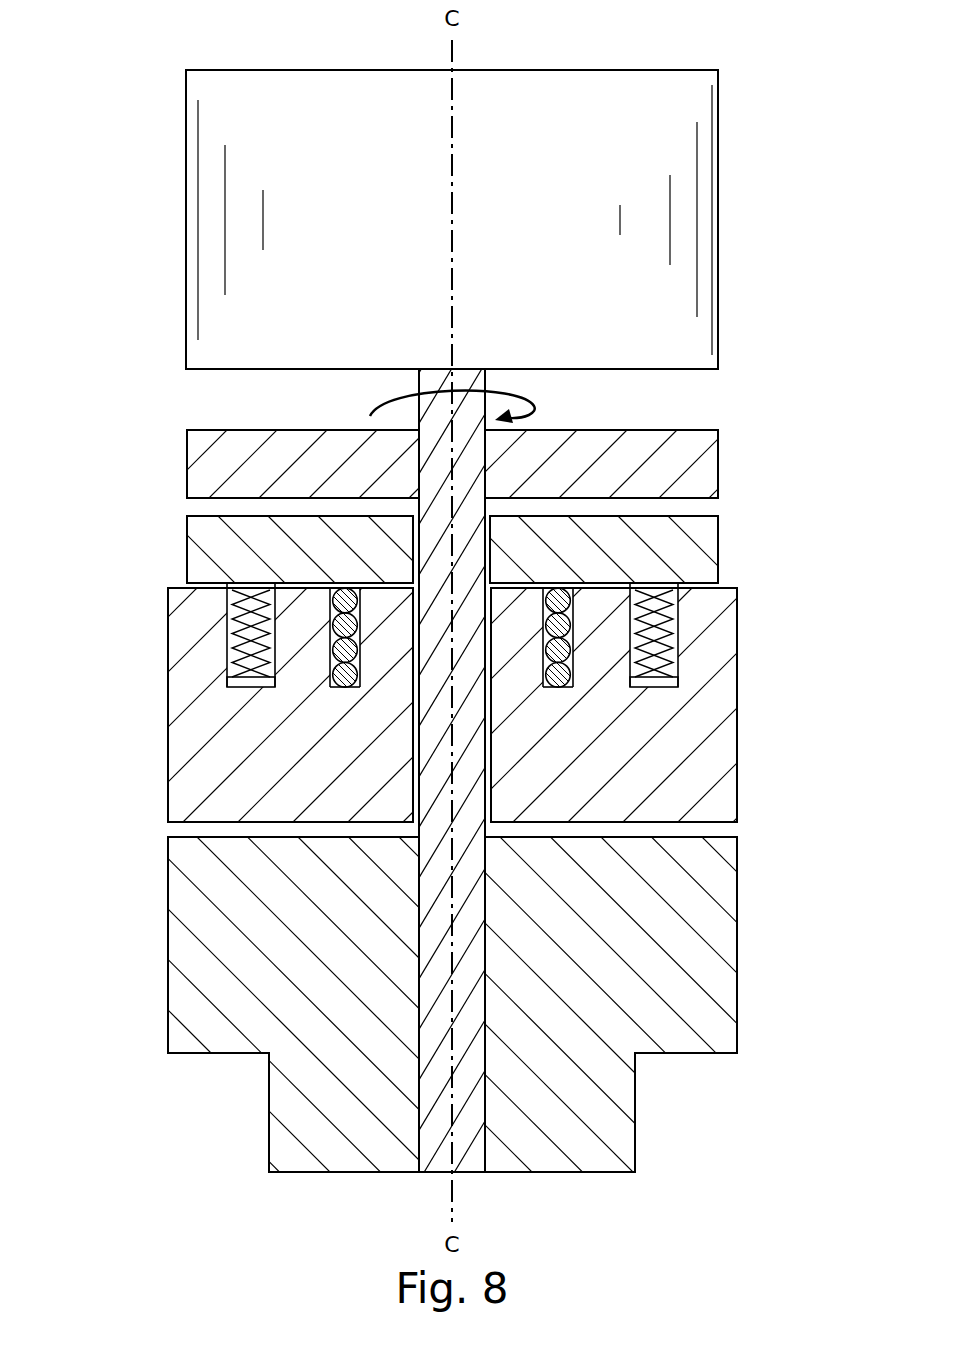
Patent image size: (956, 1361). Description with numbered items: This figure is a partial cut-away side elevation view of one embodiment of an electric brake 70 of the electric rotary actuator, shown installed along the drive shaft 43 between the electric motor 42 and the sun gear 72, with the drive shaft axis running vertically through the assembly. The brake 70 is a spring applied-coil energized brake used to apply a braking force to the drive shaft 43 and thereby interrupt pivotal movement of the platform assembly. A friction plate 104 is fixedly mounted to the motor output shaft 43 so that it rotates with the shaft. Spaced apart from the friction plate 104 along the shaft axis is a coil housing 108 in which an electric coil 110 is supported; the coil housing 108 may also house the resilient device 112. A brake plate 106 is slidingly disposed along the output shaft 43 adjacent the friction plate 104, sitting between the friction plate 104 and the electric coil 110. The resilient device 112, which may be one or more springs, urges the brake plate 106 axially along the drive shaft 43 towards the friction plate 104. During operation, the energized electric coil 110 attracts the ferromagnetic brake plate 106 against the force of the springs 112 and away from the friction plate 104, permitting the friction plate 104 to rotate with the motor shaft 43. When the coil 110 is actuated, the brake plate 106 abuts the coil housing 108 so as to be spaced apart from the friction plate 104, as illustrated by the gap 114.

The electric motor 42 is at (709, 186).
The drive shaft 43 is at (438, 378).
The brake 70 is at (478, 705).
The sun gear 72 is at (178, 943).
The friction plate 104 is at (710, 472).
The brake plate 106 is at (710, 537).
The coil housing 108 is at (725, 745).
The electric coil 110 is at (345, 688).
The resilient device 112 is at (226, 655).
The gap 114 is at (439, 507).